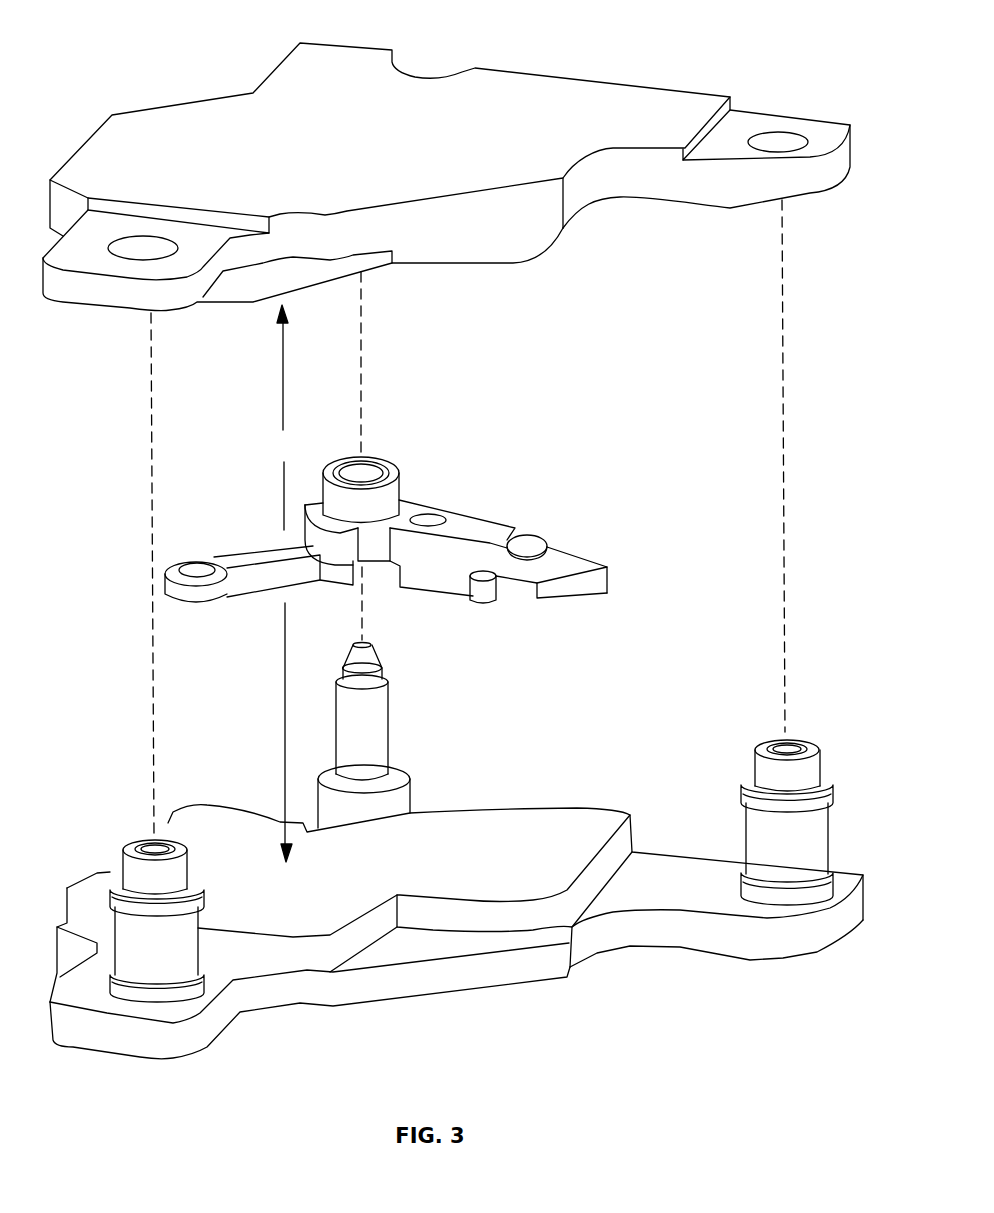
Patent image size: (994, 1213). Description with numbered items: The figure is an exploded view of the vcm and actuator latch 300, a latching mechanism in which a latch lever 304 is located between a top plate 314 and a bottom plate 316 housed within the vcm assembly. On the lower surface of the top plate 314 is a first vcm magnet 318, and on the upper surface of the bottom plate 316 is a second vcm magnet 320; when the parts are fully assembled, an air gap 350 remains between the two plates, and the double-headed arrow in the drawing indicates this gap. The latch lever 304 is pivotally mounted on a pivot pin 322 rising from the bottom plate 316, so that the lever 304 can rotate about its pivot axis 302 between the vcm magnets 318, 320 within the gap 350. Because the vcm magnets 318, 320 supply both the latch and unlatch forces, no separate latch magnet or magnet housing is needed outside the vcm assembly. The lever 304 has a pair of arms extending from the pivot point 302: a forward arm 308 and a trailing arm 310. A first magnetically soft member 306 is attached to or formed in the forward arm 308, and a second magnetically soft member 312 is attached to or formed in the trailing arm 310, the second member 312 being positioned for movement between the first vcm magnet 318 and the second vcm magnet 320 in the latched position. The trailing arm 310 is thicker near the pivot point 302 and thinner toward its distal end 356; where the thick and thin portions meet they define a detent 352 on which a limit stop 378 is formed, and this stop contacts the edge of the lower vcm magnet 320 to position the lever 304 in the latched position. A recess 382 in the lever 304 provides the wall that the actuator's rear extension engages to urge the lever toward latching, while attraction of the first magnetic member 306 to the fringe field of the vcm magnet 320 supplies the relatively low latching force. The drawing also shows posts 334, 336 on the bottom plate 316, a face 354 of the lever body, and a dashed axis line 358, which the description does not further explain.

The actuator latch 300 is at (184, 80).
The pivot axis 302 is at (368, 468).
The latch lever 304 is at (471, 493).
The first magnetically soft member 306 is at (196, 570).
The forward arm 308 is at (196, 600).
The trailing arm 310 is at (605, 580).
The second magnetically soft member 312 is at (527, 545).
The top plate 314 is at (372, 145).
The bottom plate 316 is at (617, 930).
The first vcm magnet 318 is at (513, 250).
The second vcm magnet 320 is at (394, 870).
The pivot pin 322 is at (373, 675).
The left standoff post 334 is at (130, 870).
The right standoff post 336 is at (790, 768).
The air gap 350 is at (283, 583).
The detent 352 is at (517, 590).
The front face of lever body 354 is at (433, 565).
The distal end 356 is at (585, 578).
The pivot axis 358 is at (365, 374).
The limit stop 378 is at (483, 590).
The recess 382 is at (373, 548).